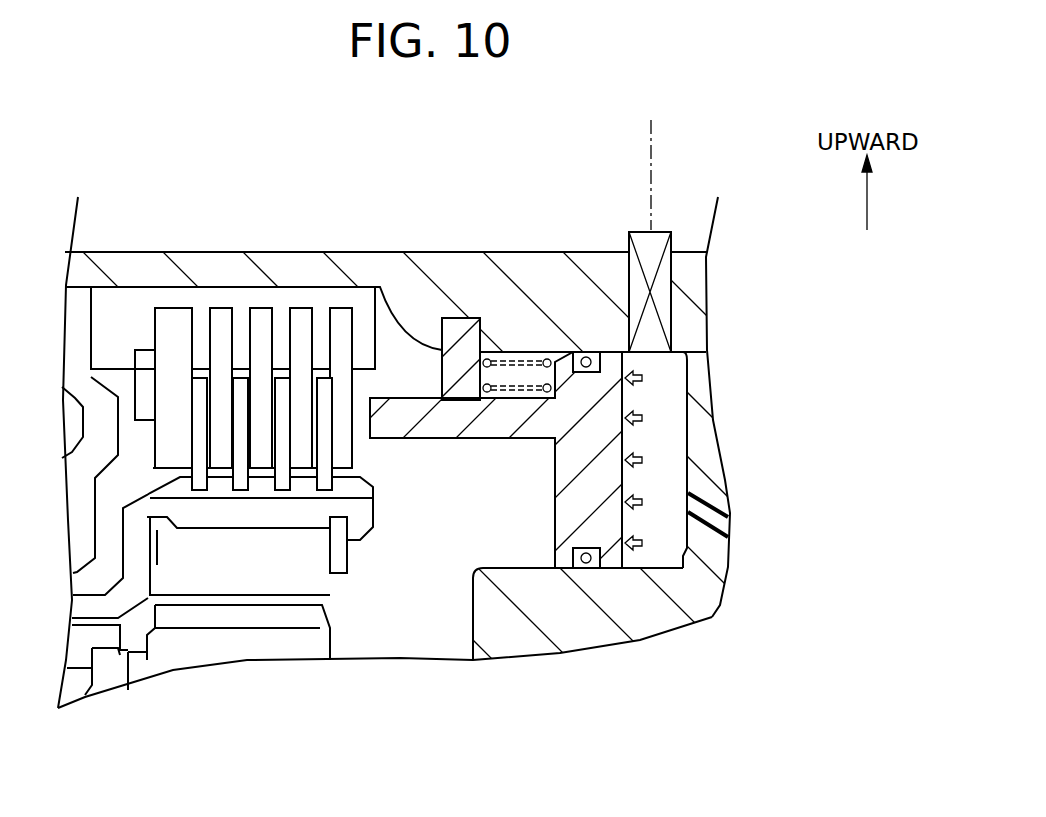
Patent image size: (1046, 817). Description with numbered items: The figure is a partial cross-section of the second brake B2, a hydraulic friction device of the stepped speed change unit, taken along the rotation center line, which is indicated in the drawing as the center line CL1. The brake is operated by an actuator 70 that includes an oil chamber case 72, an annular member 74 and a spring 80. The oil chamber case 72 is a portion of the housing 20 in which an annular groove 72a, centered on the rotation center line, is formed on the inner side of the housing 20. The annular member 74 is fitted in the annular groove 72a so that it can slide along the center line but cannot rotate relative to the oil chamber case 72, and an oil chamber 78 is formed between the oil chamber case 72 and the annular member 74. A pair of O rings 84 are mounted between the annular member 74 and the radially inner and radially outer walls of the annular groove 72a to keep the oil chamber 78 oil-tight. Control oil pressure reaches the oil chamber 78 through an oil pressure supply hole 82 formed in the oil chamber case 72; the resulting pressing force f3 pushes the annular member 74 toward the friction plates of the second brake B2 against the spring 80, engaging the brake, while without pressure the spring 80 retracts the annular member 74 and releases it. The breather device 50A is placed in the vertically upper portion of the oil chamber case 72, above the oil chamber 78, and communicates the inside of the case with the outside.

The housing 20 is at (448, 275).
The second brake B2 is at (251, 293).
The breather device 50A is at (656, 243).
The center line CL1 is at (649, 161).
The spring 80 is at (548, 360).
The O rings 84 is at (589, 352).
The annular member 74 is at (595, 398).
The oil chamber case 72 is at (564, 500).
The annular groove 72a is at (688, 446).
The oil pressure supply hole 82 is at (730, 522).
The oil chamber 78 is at (678, 495).
The pressing force f3 is at (637, 507).
The actuator 70 is at (626, 733).